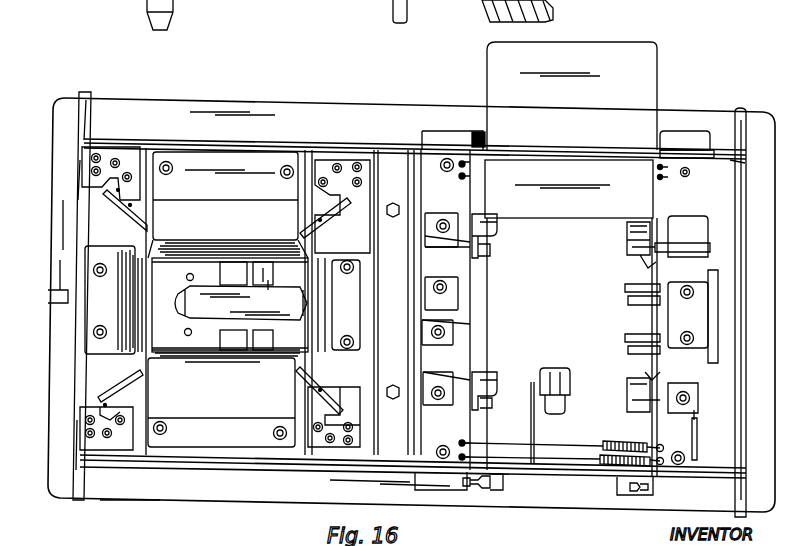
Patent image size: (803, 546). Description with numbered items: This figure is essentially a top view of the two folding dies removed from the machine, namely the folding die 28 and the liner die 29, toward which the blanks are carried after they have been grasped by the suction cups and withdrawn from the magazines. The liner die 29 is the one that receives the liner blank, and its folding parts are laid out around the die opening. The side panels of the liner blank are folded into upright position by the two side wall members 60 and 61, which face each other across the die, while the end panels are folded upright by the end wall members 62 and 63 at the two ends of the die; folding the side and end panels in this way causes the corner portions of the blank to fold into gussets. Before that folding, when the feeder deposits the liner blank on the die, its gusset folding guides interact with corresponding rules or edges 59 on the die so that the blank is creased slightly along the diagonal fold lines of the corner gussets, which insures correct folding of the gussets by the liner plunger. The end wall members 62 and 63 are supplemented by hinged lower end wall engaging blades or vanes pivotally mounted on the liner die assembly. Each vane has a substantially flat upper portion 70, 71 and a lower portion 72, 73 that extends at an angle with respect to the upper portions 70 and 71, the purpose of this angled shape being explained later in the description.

The folding die 28 is at (575, 311).
The liner die 29 is at (250, 311).
The rules or edges 59 is at (130, 218).
The side wall member 60 is at (250, 225).
The side wall member 61 is at (228, 385).
The end wall member 62 is at (137, 293).
The end wall member 63 is at (320, 308).
The upper portion of vane 70 is at (182, 282).
The upper portion of vane 71 is at (295, 282).
The lower portion of vane 72 is at (230, 280).
The lower portion of vane 73 is at (268, 292).